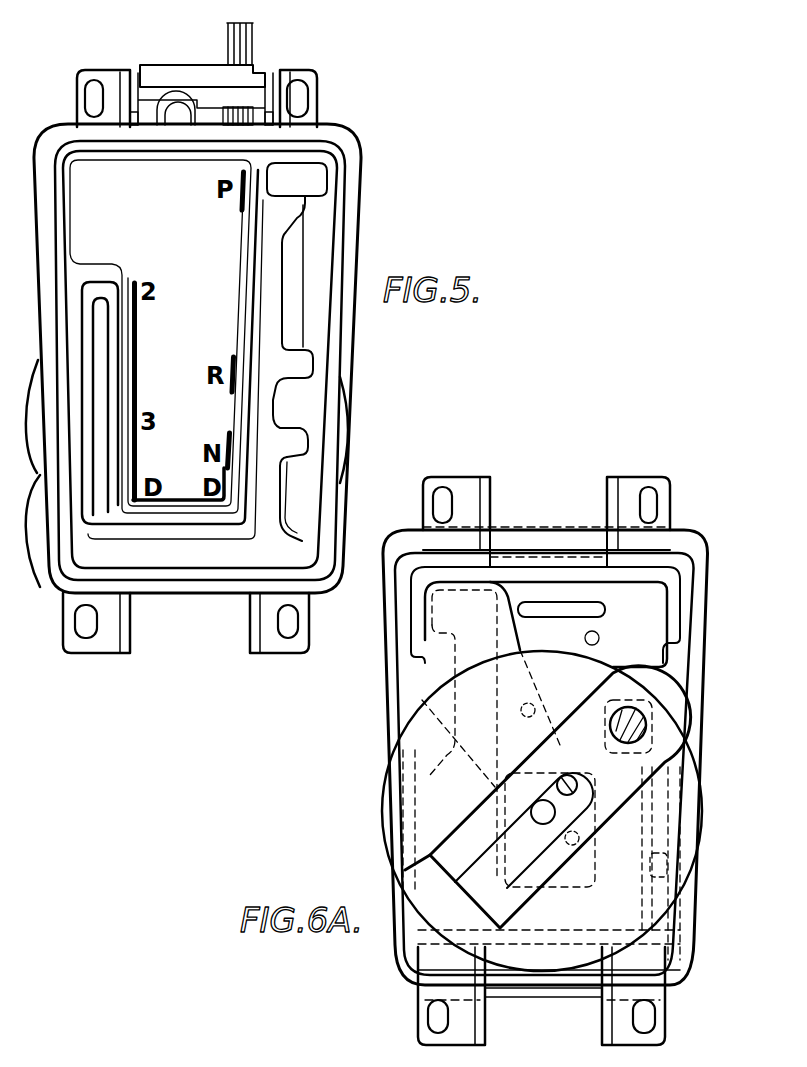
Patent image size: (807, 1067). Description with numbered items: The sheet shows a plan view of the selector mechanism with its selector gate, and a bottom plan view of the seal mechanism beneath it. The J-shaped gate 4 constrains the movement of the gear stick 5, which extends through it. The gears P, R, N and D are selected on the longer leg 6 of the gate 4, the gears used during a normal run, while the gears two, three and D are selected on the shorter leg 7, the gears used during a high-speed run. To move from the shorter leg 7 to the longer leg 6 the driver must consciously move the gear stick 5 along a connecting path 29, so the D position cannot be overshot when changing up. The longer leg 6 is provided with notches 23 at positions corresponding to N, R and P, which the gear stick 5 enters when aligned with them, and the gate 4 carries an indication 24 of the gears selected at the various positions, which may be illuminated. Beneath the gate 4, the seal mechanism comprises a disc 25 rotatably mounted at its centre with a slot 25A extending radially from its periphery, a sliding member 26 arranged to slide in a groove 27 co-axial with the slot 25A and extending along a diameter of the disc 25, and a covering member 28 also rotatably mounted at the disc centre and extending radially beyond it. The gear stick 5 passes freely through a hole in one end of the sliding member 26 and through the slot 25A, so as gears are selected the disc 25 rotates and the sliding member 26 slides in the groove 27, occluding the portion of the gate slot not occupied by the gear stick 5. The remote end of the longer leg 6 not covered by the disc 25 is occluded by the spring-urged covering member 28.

In FIG. 5, the gate 4 is at (265, 305).
In FIG. 6A, the gate 4 is at (558, 900).
In FIG. 6A, the gear stick 5 is at (632, 722).
In FIG. 5, the longer leg 6 is at (272, 335).
In FIG. 5, the shorter leg 7 is at (87, 447).
In FIG. 5, the detent notch 23 is at (313, 213).
In FIG. 5, the indication 24 is at (137, 352).
In FIG. 5, the disc 25 is at (187, 494).
In FIG. 6A, the disc 25 is at (690, 873).
In FIG. 6A, the slot 25A is at (625, 755).
In FIG. 6A, the sliding member 26 is at (653, 692).
In FIG. 6A, the groove 27 is at (420, 870).
In FIG. 6A, the covering member 28 is at (510, 642).
In FIG. 5, the connecting path 29 is at (223, 553).